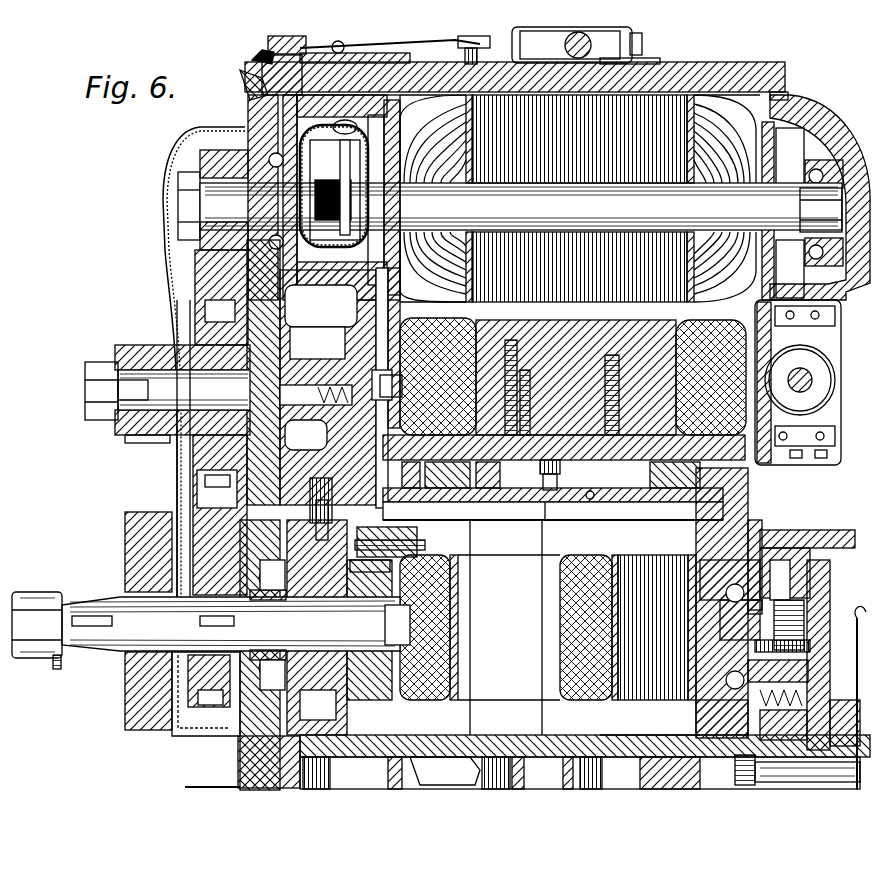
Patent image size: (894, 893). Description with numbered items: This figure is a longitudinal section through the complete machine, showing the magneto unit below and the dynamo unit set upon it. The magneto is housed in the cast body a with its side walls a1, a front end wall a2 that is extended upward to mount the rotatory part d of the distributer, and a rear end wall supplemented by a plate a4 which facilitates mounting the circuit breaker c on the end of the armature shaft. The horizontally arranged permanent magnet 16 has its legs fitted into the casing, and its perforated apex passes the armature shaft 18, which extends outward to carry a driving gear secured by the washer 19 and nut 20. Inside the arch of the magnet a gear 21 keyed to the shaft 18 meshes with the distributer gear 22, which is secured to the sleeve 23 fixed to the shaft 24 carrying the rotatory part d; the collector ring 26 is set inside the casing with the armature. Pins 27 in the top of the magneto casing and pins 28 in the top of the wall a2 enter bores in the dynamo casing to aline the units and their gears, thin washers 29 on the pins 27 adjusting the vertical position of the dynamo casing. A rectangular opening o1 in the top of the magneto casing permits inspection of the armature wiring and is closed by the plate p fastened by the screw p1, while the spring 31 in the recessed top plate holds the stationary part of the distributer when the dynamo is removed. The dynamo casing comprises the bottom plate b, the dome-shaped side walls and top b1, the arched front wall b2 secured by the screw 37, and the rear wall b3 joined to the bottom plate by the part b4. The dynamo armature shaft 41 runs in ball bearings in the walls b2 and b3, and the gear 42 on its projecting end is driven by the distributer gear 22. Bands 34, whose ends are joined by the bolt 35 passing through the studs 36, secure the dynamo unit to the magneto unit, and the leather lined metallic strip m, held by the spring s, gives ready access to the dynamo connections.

The permanent magnet 16 is at (128, 540).
The armature shaft 18 is at (236, 624).
The washer 19 is at (56, 664).
The nut 20 is at (37, 625).
The gear 21 is at (206, 694).
The distributer gear 22 is at (190, 492).
The sleeve 23 is at (168, 440).
The shaft 24 is at (167, 390).
The collector ring 26 is at (352, 627).
The pins 27 is at (655, 470).
The pins 28 is at (195, 262).
The thin washers 29 is at (678, 490).
The spring 31 is at (553, 504).
The bands 34 is at (640, 65).
The bolt 35 is at (575, 32).
The studs 36 is at (642, 44).
The screw 37 is at (256, 64).
The armature shaft 41 is at (510, 206).
The gear 42 is at (244, 152).
The body of the magneto casing a is at (745, 494).
The side walls of the magneto casing a1 is at (400, 312).
The front end wall a2 is at (228, 757).
The plate a4 is at (762, 522).
The bottom plate b is at (564, 389).
The side walls and top b1 is at (515, 72).
The front wall b2 is at (280, 75).
The rear wall b3 is at (836, 148).
The part joining rear wall with bottom plate b4 is at (842, 352).
The circuit breaker c is at (793, 669).
The rotatory part of the distributer d is at (328, 387).
The leather lined metallic strip m is at (287, 43).
The rectangular opening o1 is at (584, 506).
The plate p is at (560, 478).
The screw p1 is at (537, 511).
The spring s is at (395, 42).